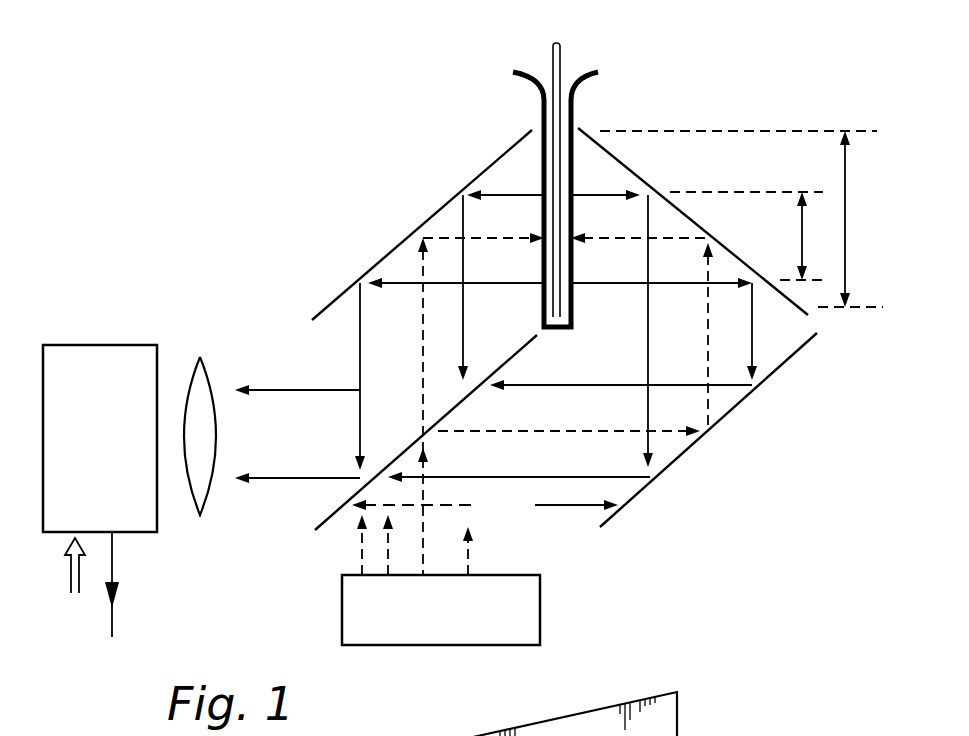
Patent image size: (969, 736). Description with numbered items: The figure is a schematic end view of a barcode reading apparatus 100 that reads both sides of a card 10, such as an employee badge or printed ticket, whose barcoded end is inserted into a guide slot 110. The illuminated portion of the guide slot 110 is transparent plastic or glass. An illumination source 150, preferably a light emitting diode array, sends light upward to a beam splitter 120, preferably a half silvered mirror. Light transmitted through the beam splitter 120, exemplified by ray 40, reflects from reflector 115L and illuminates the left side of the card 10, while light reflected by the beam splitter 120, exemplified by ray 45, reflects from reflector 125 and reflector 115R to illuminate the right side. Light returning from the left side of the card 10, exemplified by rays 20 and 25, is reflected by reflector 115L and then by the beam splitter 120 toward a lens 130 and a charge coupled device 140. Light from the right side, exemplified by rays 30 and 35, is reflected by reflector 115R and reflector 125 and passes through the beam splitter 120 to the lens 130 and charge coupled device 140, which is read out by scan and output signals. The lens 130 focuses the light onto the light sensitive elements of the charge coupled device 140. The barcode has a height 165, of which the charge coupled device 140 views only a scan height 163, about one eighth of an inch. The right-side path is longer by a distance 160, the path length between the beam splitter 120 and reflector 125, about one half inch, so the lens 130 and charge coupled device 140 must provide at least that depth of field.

The barcode reading apparatus 100 is at (698, 100).
The card 10 is at (560, 50).
The guide slot 110 is at (541, 116).
The reflector 115L is at (428, 215).
The reflector 115R is at (622, 150).
The beam splitter 120 is at (322, 527).
The reflector 125 is at (700, 440).
The lens 130 is at (207, 357).
The charge coupled device 140 is at (103, 343).
The illumination source 150 is at (342, 617).
The ray 20 is at (527, 282).
The ray 25 is at (527, 190).
The ray 30 is at (625, 282).
The ray 35 is at (617, 190).
The ray 40 is at (486, 222).
The ray 45 is at (626, 236).
The distance 160 is at (485, 506).
The scan height 163 is at (748, 236).
The height 165 is at (850, 219).